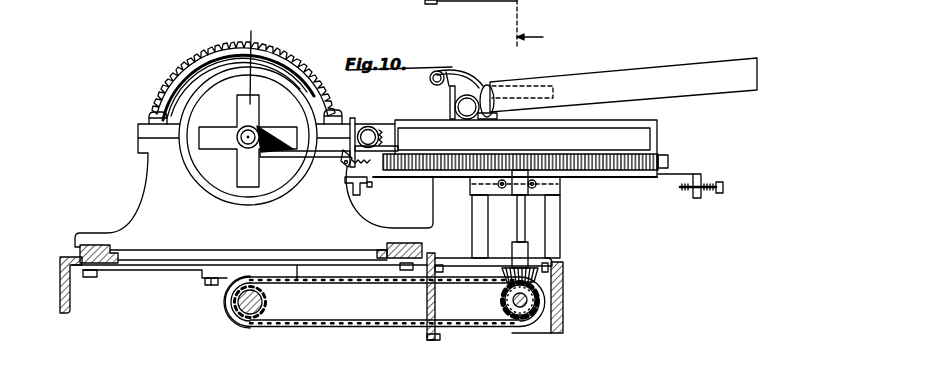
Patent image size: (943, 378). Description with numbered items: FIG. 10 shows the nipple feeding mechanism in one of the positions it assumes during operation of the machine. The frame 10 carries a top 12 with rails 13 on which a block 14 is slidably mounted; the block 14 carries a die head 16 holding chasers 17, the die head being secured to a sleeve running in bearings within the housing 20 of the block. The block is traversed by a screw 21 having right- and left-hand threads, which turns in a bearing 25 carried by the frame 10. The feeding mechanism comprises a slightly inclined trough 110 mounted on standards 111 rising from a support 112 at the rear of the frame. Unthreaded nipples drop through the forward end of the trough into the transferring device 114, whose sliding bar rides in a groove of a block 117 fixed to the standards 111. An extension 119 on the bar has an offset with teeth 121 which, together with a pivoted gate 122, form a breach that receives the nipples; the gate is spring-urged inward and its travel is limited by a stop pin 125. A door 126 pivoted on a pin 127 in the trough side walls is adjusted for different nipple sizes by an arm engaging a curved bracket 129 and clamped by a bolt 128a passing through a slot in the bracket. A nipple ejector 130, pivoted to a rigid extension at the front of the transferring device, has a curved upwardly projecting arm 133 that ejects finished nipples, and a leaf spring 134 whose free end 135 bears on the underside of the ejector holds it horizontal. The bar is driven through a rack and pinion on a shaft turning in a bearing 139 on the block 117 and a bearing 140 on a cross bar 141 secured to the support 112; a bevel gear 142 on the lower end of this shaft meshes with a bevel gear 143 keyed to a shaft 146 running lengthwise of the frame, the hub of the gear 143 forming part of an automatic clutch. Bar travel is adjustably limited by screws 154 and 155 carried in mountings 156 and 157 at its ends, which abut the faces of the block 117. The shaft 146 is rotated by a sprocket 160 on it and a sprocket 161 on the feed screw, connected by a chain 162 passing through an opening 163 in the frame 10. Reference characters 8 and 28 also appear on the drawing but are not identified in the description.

The dimension reference 8 is at (527, 33).
The frame 10 is at (60, 290).
The top 12 is at (120, 258).
The rails 13 is at (110, 245).
The block 14 is at (165, 188).
The die head 16 is at (243, 73).
The chasers 17 is at (245, 57).
The housing 20 is at (293, 82).
The screw 21 is at (233, 320).
The bearing 25 is at (215, 286).
The arcuate guide 28 is at (280, 53).
The trough 110 is at (622, 83).
The standards 111 is at (472, 218).
The support 112 is at (563, 310).
The transferring device 114 is at (612, 182).
The block 117 is at (553, 186).
The extension 119 is at (650, 121).
The teeth 121 is at (380, 145).
The gate 122 is at (353, 122).
The stop pin 125 is at (353, 160).
The door 126 is at (455, 110).
The pin 127 is at (437, 85).
The bolt 128a is at (466, 70).
The curved bracket 129 is at (455, 74).
The nipple ejector 130 is at (275, 156).
The curved upwardly projecting arm 133 is at (246, 149).
The leaf spring 134 is at (358, 165).
The free end 135 is at (343, 165).
The bearing 139 is at (499, 186).
The bearing 140 is at (516, 248).
The cross bar 141 is at (453, 259).
The bevel gear 142 is at (536, 274).
The bevel gear 143 is at (488, 85).
The shaft 146 is at (524, 306).
The screw 154 is at (366, 191).
The screw 155 is at (682, 192).
The mounting 156 is at (349, 210).
The mounting 157 is at (702, 175).
The sprocket 160 is at (535, 293).
The sprocket 161 is at (268, 304).
The chain 162 is at (327, 328).
The opening 163 is at (501, 300).